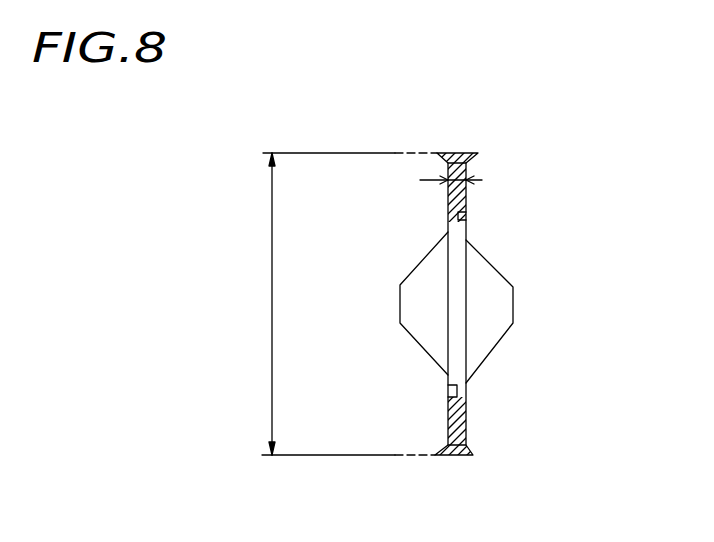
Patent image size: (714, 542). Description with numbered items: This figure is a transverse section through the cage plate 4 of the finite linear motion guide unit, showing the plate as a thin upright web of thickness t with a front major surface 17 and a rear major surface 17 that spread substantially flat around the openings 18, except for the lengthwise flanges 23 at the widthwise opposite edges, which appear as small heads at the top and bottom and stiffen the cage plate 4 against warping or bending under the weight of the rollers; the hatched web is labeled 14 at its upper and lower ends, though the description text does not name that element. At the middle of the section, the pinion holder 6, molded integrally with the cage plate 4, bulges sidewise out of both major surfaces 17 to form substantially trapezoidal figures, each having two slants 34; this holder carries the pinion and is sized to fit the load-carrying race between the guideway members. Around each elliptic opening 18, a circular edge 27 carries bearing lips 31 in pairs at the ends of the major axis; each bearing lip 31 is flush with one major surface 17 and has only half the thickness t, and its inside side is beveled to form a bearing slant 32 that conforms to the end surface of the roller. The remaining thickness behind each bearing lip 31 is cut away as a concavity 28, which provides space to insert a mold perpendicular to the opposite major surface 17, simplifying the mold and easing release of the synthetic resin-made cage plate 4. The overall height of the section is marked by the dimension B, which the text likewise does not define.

The pin shaft 14 is at (456, 153).
The flange 23 is at (440, 156).
The pinion holder 6 is at (400, 310).
The circular edge 27 is at (455, 298).
The opening 18 is at (455, 318).
The slant 34 is at (412, 272).
The concavity 28 is at (470, 218).
The bearing slant 32 is at (470, 237).
The bearing lip 31 is at (448, 218).
The major surface 17 is at (448, 200).
The cage plate 4 is at (514, 205).
The thickness t is at (470, 186).
The length B is at (349, 304).